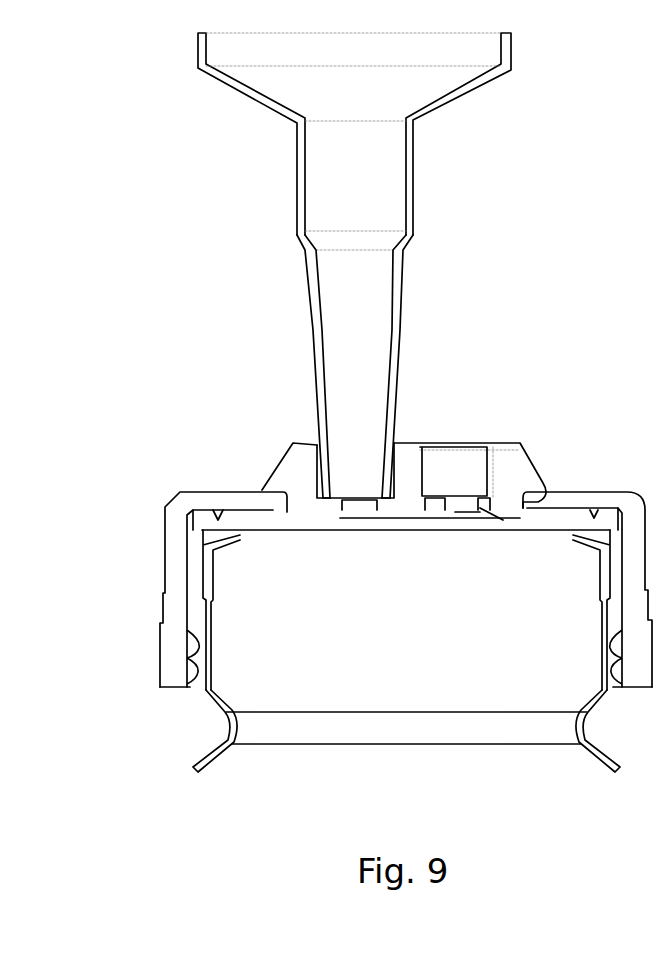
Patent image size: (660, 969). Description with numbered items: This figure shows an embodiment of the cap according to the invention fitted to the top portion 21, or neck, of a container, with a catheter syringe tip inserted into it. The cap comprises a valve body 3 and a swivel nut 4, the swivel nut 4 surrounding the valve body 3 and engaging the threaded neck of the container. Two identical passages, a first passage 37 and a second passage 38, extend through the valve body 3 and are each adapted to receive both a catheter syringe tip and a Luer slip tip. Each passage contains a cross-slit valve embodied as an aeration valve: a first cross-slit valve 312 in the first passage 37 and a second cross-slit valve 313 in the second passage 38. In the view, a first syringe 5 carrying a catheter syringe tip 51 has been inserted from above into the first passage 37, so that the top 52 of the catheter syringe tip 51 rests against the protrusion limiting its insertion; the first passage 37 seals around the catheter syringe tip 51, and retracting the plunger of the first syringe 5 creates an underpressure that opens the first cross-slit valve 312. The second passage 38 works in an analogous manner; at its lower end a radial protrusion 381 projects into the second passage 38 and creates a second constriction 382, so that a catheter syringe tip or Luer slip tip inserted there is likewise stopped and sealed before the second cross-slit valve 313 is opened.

The valve body 3 is at (508, 480).
The swivel nut 4 is at (175, 520).
The first syringe 5 is at (357, 222).
The top portion 21 is at (410, 683).
The first passage 37 is at (357, 418).
The second passage 38 is at (448, 472).
The catheter syringe tip 51 is at (347, 275).
The top of catheter tip 52 is at (360, 492).
The first cross-slit valve 312 is at (340, 522).
The second cross-slit valve 313 is at (462, 515).
The radial protrusion 381 is at (483, 502).
The second constriction 382 is at (443, 502).